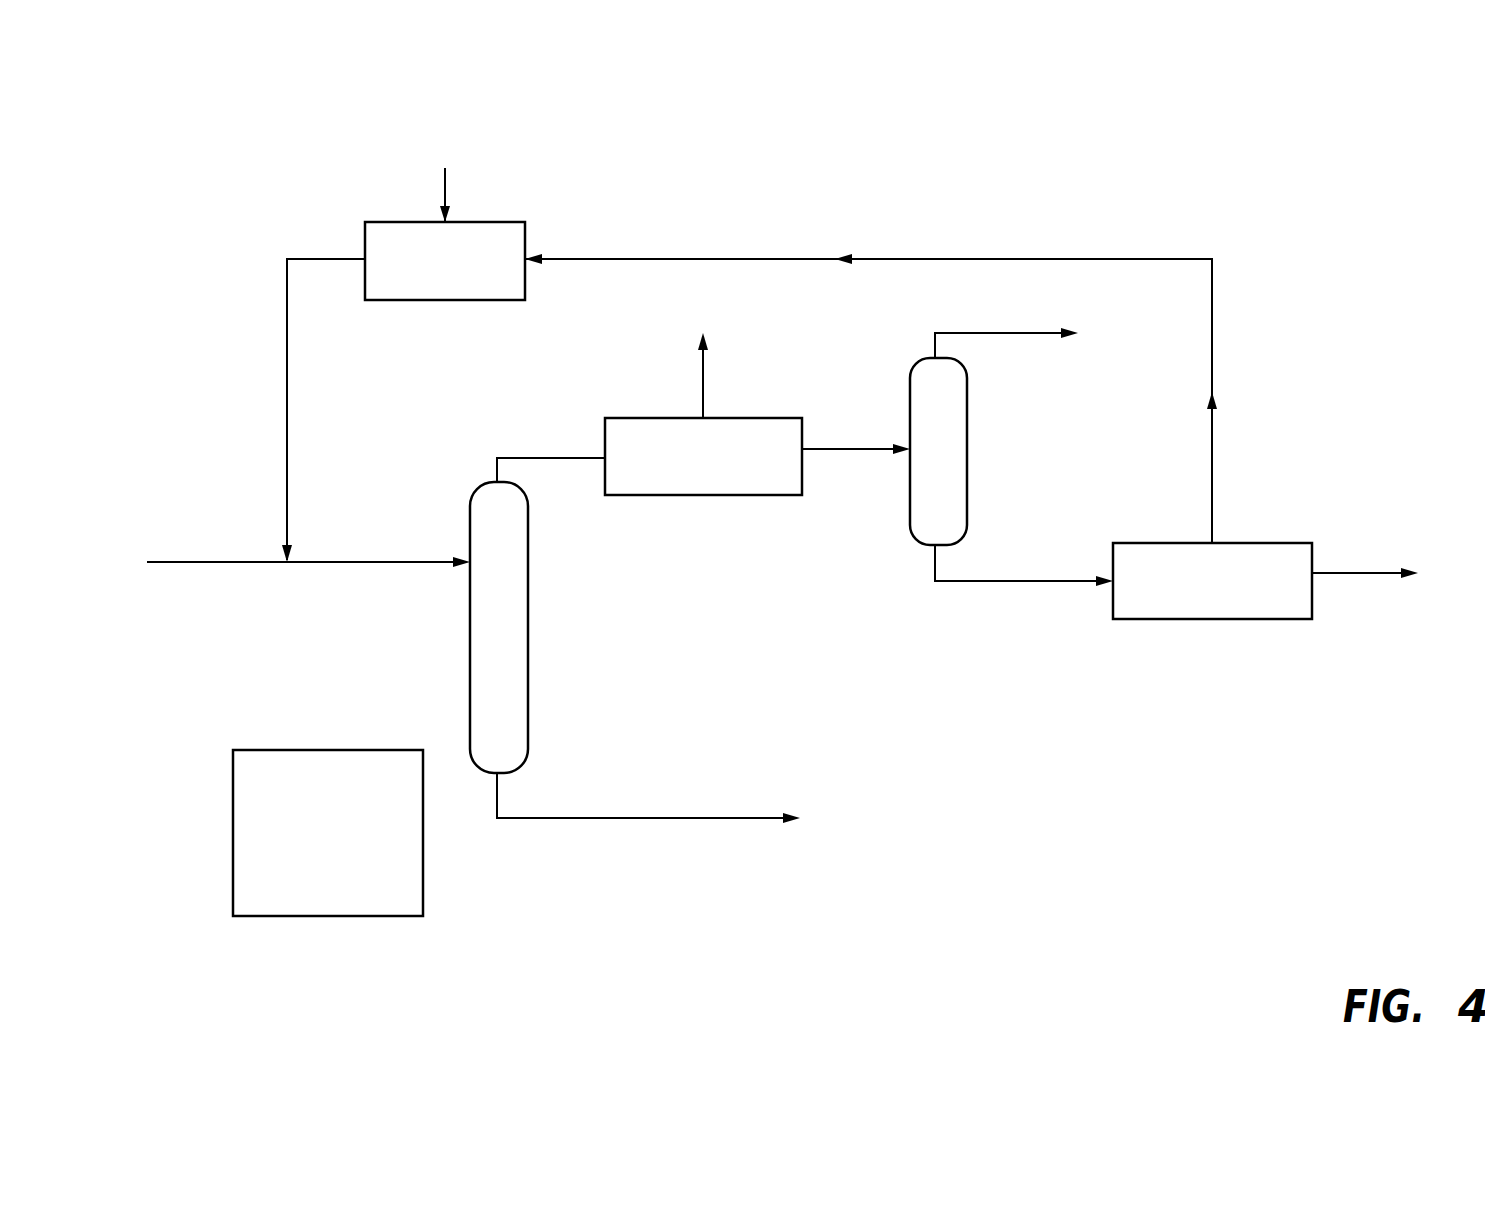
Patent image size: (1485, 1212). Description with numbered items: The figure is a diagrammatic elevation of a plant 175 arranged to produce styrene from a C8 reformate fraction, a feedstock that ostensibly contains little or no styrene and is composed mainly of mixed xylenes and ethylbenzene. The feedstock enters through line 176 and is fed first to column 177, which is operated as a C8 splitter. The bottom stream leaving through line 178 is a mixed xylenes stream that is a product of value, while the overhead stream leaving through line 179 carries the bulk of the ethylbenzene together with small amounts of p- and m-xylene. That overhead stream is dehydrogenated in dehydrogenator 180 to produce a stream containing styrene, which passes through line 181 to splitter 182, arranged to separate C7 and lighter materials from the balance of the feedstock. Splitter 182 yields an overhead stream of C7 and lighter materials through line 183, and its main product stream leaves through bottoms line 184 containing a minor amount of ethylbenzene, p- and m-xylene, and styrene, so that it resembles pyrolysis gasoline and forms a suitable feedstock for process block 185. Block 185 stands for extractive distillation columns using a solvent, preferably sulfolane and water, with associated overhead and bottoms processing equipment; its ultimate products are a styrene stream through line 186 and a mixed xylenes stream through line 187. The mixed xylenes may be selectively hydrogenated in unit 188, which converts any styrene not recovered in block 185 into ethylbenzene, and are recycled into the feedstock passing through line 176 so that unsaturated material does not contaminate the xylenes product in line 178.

The plant 175 is at (278, 211).
The line 176 is at (404, 563).
The column 177 is at (528, 698).
The line 178 is at (703, 820).
The line 179 is at (493, 472).
The dehydrogenator 180 is at (660, 496).
The line 181 is at (853, 455).
The splitter 182 is at (967, 422).
The line 183 is at (972, 335).
The bottoms line 184 is at (968, 583).
The process block 185 is at (1172, 543).
The line 186 is at (1365, 575).
The line 187 is at (1212, 372).
The unit 188 is at (402, 300).